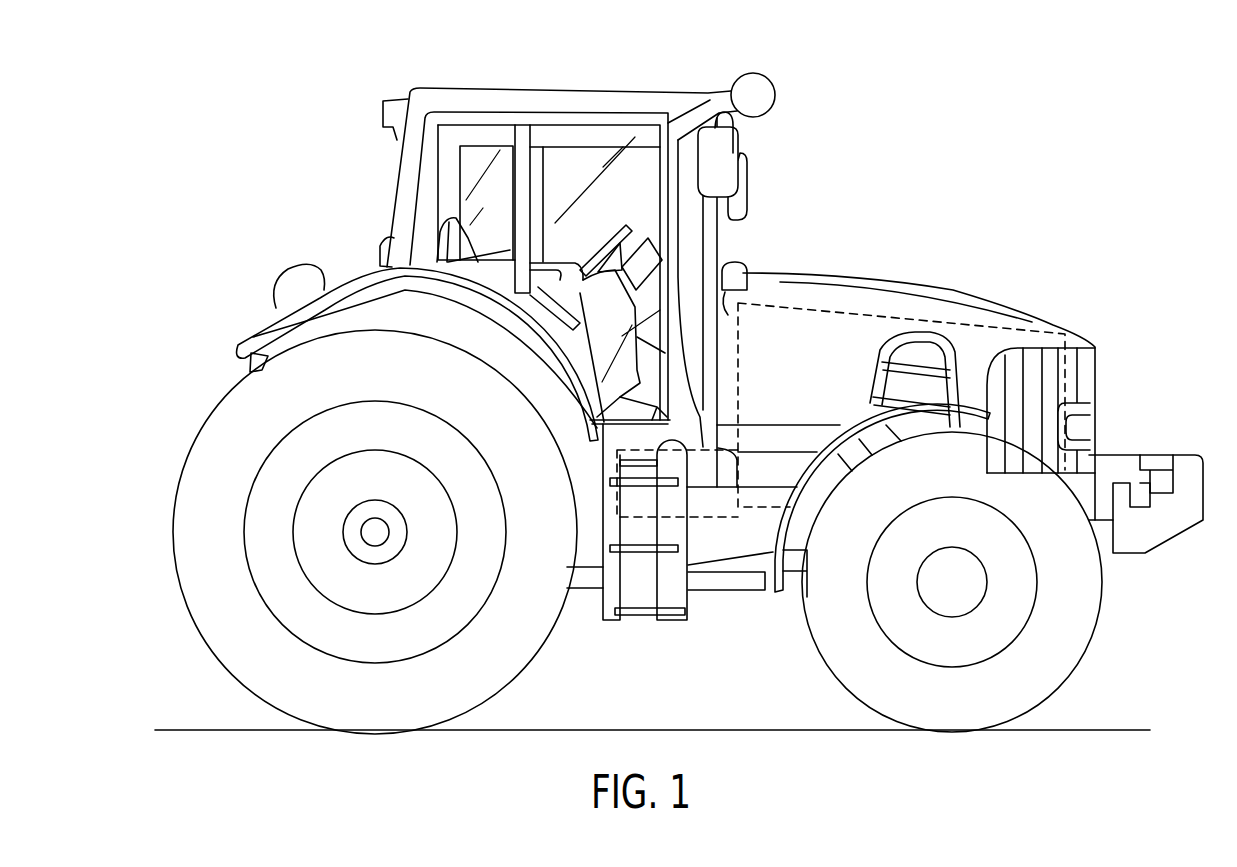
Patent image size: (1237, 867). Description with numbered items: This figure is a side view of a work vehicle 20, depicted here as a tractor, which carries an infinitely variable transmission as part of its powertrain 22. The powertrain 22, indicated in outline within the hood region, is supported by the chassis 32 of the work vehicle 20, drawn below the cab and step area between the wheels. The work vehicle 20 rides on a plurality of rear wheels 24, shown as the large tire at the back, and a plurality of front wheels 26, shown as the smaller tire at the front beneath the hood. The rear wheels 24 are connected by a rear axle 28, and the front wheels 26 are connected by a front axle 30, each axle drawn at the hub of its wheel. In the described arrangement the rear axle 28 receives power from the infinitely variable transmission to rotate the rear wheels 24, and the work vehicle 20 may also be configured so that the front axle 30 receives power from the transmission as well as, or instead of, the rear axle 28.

The work vehicle 20 is at (426, 74).
The powertrain 22 is at (849, 303).
The rear wheels 24 is at (215, 430).
The front wheels 26 is at (1027, 620).
The rear axle 28 is at (373, 535).
The front axle 30 is at (952, 587).
The chassis 32 is at (720, 582).